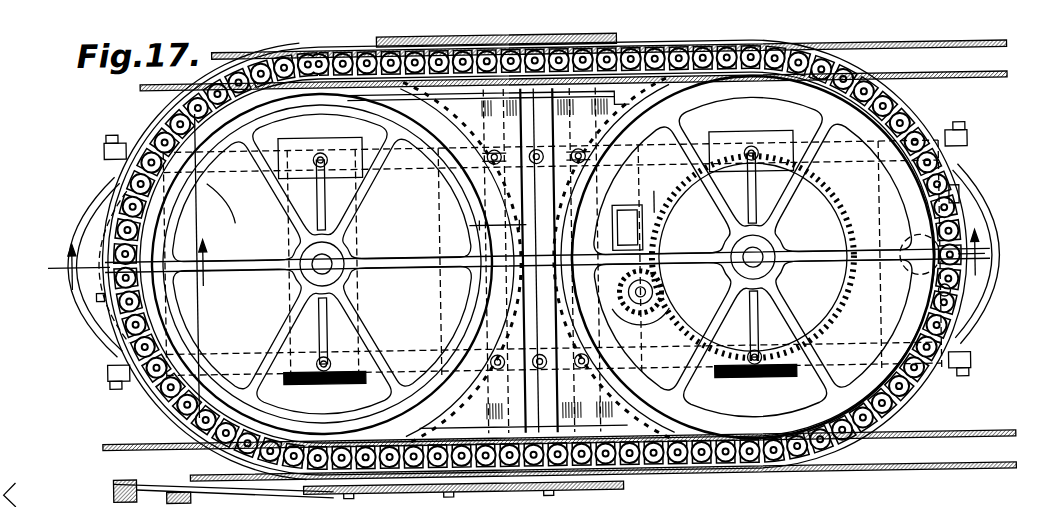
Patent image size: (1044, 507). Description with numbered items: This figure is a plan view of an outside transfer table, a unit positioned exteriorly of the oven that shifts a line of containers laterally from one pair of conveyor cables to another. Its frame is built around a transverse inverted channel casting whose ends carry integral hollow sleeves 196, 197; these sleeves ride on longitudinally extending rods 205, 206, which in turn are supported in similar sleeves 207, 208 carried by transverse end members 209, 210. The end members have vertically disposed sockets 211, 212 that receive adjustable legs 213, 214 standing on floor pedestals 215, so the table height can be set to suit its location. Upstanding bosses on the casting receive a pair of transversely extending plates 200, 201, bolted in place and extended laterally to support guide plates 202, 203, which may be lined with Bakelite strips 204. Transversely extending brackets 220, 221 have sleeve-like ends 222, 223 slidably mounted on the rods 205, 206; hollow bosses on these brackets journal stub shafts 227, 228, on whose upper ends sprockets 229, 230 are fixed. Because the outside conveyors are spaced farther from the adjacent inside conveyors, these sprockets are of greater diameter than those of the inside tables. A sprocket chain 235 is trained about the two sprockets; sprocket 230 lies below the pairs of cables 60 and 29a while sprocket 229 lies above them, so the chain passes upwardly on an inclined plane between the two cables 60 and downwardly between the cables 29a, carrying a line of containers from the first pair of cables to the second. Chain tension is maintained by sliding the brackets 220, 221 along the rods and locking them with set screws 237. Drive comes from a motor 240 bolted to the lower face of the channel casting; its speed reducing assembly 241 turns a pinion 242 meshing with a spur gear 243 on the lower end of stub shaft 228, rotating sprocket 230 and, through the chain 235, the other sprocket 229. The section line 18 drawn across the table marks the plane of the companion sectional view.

The section line 18- 18 is at (516, 260).
The cables 29a is at (884, 51).
The cables 60 is at (162, 441).
The hollow sleeve 196 is at (545, 358).
The hollow sleeve 197 is at (512, 200).
The transversely extending plate 200 is at (497, 152).
The transversely extending plate 201 is at (580, 152).
The guide plate 202 is at (468, 38).
The guide plate 203 is at (539, 152).
The Bakelite strip 204 is at (378, 40).
The longitudinally extending rod 205 is at (412, 322).
The longitudinally extending rod 206 is at (416, 178).
The sleeve 207 is at (114, 140).
The sleeve 208 is at (110, 386).
The transverse end member 209 is at (962, 204).
The transverse end member 210 is at (190, 312).
The vertically disposed socket 211 is at (950, 304).
The vertically disposed socket 212 is at (94, 300).
The adjustable leg 213 is at (954, 286).
The adjustable leg 214 is at (78, 212).
The floor pedestal 215 is at (100, 195).
The transversely extending bracket 220 is at (340, 330).
The transversely extending bracket 221 is at (830, 320).
The sleeve-like end 222 is at (305, 386).
The sleeve-like end 223 is at (316, 150).
The stub shaft 227 is at (332, 258).
The stub shaft 228 is at (818, 218).
The sprocket 229 is at (255, 250).
The sprocket 230 is at (838, 248).
The sprocket chain 235 is at (682, 462).
The set screw 237 is at (326, 155).
The motor 240 is at (475, 231).
The speed reducing assembly 241 is at (640, 332).
The pinion 242 is at (632, 231).
The spur gear 243 is at (672, 210).